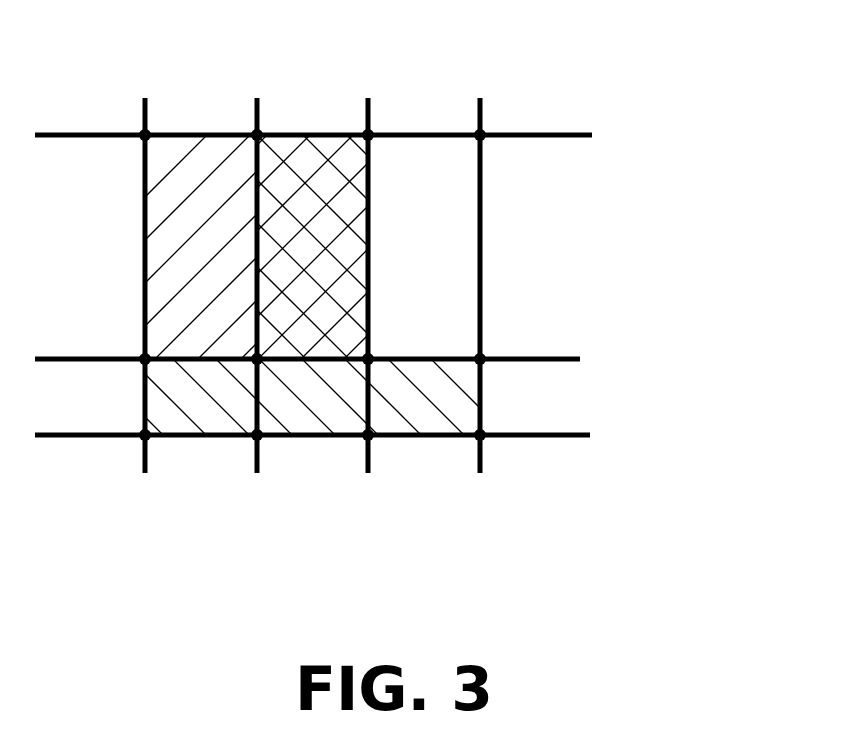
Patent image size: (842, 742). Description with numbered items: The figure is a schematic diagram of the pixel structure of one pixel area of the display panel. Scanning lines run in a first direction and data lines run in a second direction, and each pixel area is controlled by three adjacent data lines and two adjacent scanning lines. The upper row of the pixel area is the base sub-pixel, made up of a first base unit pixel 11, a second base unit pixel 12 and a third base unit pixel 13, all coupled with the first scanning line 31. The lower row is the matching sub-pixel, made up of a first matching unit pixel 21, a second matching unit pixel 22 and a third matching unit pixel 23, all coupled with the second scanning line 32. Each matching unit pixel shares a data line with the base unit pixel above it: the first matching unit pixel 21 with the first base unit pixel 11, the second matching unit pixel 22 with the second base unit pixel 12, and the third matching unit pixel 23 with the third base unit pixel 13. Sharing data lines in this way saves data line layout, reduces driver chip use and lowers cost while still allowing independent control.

The first base unit pixel 11 is at (160, 187).
The second base unit pixel 12 is at (325, 148).
The third base unit pixel 13 is at (460, 190).
The first matching unit pixel 21 is at (198, 395).
The second matching unit pixel 22 is at (292, 413).
The third matching unit pixel 23 is at (414, 415).
The first scanning line 31 is at (592, 135).
The second scanning line 32 is at (580, 359).